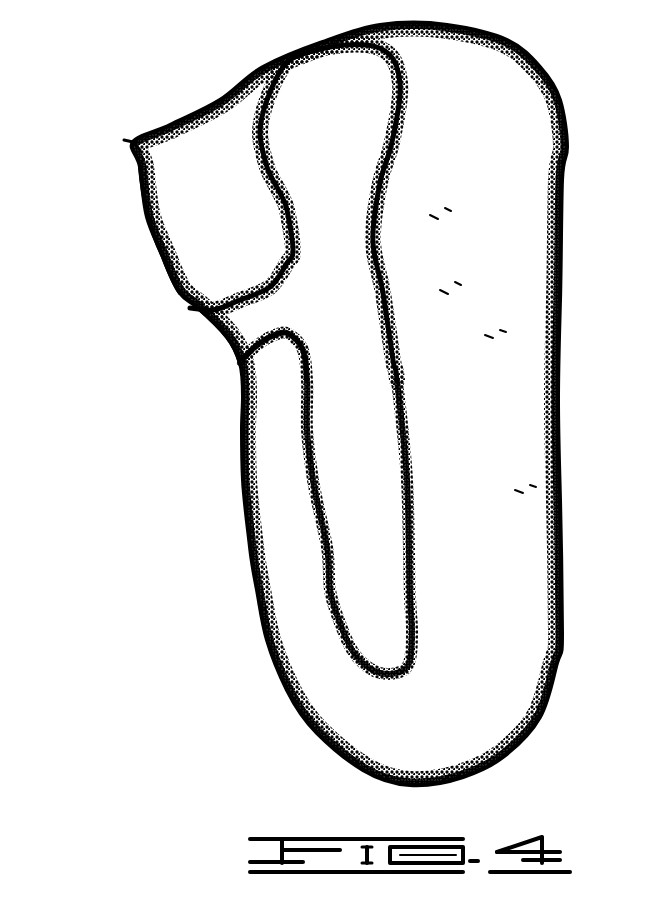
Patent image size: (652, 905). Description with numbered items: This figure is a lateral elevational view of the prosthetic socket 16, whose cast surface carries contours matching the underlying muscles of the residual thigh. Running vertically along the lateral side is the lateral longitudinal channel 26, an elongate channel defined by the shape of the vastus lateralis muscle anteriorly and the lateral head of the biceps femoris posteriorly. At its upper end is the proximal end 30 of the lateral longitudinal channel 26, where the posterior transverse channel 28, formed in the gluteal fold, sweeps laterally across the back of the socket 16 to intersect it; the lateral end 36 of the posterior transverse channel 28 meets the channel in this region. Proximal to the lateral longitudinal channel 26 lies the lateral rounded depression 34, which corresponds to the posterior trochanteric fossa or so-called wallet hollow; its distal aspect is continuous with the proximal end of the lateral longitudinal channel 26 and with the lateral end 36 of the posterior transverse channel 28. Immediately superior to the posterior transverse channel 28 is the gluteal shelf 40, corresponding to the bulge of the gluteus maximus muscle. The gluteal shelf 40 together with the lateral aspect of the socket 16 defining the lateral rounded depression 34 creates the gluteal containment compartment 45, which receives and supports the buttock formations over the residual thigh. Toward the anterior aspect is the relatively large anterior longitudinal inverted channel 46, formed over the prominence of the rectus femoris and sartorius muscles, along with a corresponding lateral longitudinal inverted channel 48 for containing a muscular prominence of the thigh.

The socket 16 is at (553, 72).
The lateral rounded depression 34 is at (308, 101).
The lateral longitudinal channel 26 is at (354, 430).
The gluteal containment compartment 45 is at (128, 142).
The gluteal shelf 40 is at (166, 227).
The posterior transverse channel 28 is at (228, 337).
The lateral end of the posterior transverse channel 36 is at (313, 297).
The proximal end of the lateral longitudinal channel 30 is at (353, 340).
The lateral longitudinal inverted channel 48 is at (460, 347).
The anterior longitudinal inverted channel 46 is at (505, 497).